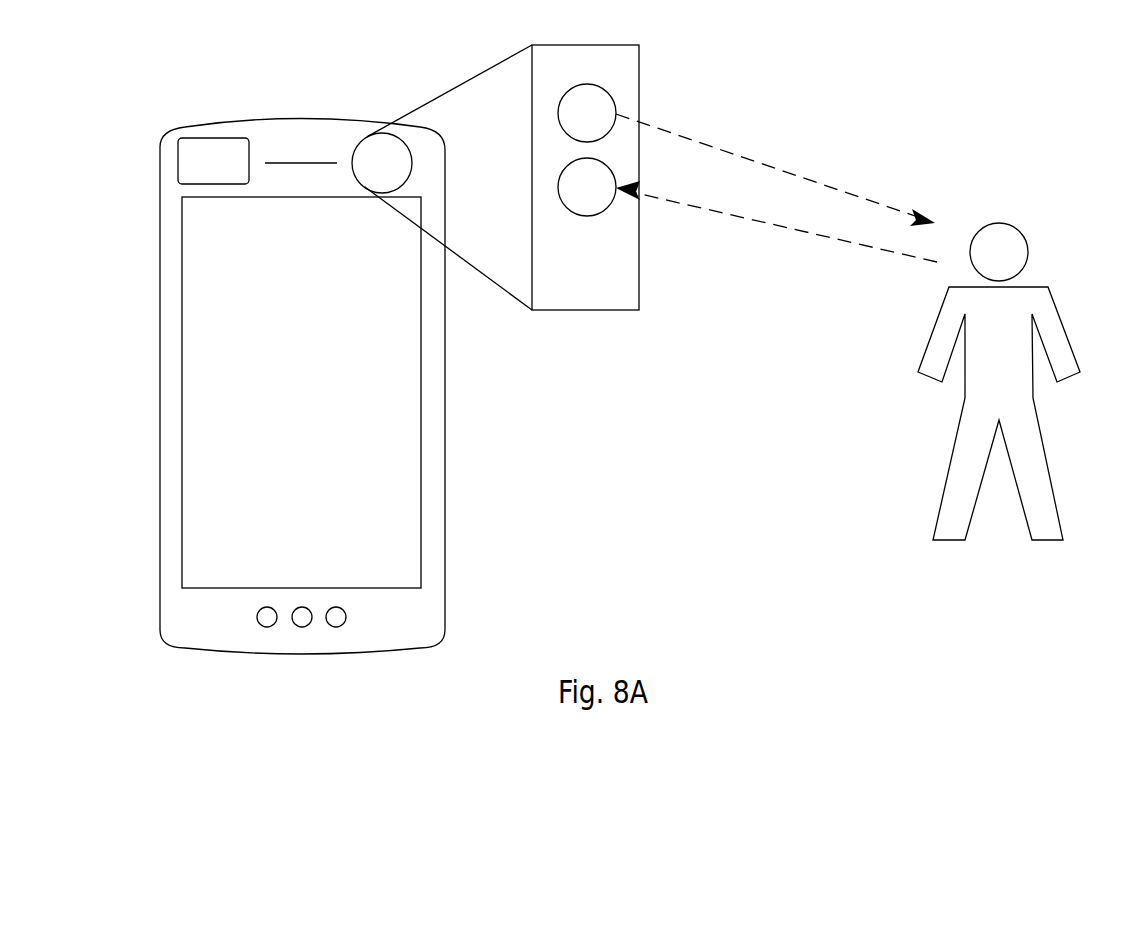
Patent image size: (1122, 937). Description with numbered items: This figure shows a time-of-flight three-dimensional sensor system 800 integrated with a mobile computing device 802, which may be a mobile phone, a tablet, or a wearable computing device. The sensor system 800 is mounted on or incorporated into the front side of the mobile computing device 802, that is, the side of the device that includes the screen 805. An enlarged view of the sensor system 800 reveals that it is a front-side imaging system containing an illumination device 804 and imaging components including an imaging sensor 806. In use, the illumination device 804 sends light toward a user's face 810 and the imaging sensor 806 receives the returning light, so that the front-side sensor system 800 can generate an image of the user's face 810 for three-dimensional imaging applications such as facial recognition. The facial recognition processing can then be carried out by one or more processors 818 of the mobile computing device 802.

The 3D sensor system 800 is at (400, 178).
The mobile computing device 802 is at (222, 632).
The illumination device 804 is at (605, 128).
The screen 805 is at (319, 402).
The imaging sensor 806 is at (605, 202).
The user's face 810 is at (1017, 267).
The processors 818 is at (257, 161).